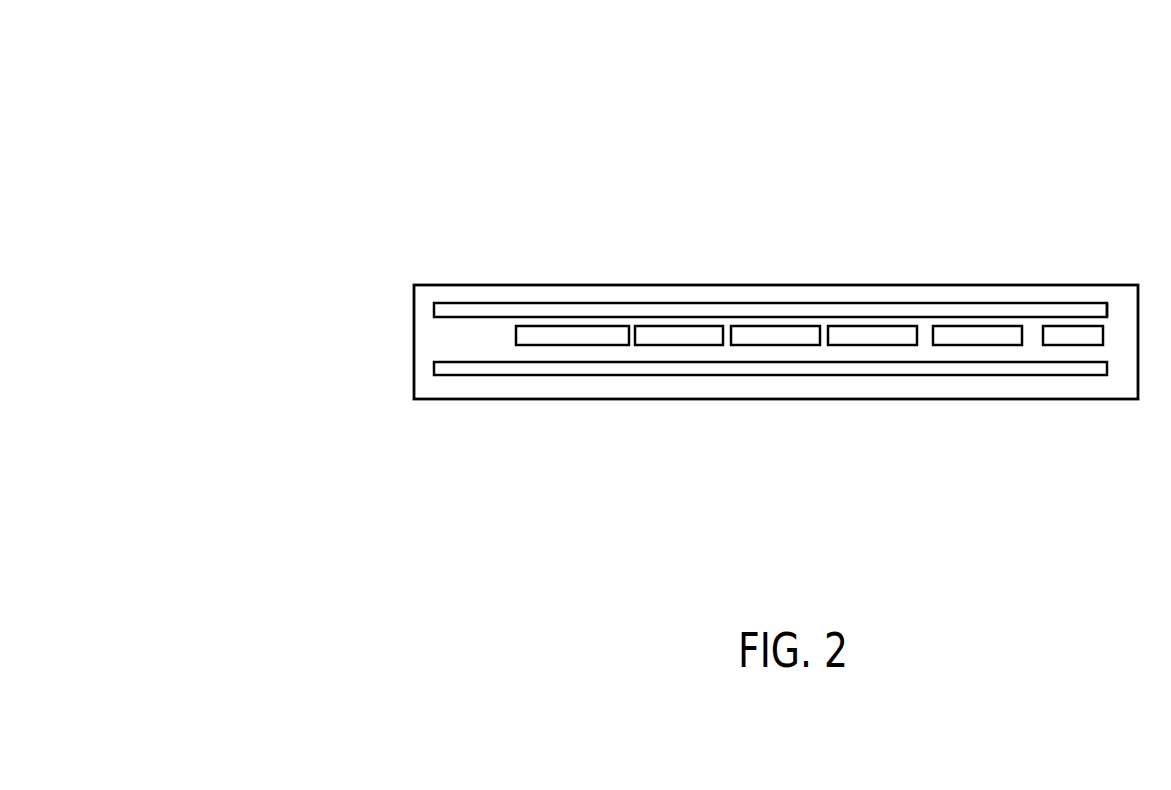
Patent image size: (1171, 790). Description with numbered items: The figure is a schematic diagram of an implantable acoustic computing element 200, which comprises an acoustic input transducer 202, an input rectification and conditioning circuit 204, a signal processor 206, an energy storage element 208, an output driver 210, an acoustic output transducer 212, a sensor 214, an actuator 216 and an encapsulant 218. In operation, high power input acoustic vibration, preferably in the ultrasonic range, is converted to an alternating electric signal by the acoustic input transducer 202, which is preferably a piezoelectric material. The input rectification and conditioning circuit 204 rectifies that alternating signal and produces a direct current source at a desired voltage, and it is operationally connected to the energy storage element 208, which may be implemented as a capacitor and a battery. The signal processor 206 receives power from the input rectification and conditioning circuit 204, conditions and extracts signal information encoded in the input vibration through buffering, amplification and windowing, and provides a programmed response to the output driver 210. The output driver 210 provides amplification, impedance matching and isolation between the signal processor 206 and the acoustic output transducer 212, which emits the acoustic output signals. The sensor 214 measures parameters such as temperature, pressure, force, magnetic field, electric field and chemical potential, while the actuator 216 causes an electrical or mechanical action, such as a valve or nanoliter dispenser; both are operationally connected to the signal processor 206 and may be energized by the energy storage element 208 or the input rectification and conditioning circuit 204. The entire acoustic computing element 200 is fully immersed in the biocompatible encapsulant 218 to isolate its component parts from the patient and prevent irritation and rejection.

The implantable acoustic computing element 200 is at (293, 177).
The acoustic input transducer 202 is at (517, 304).
The input rectification and conditioning circuit 204 is at (537, 347).
The signal processor 206 is at (665, 347).
The energy storage element 208 is at (783, 347).
The output driver 210 is at (885, 347).
The acoustic output transducer 212 is at (983, 372).
The sensor 214 is at (1008, 348).
The actuator 216 is at (1088, 320).
The encapsulant 218 is at (960, 283).